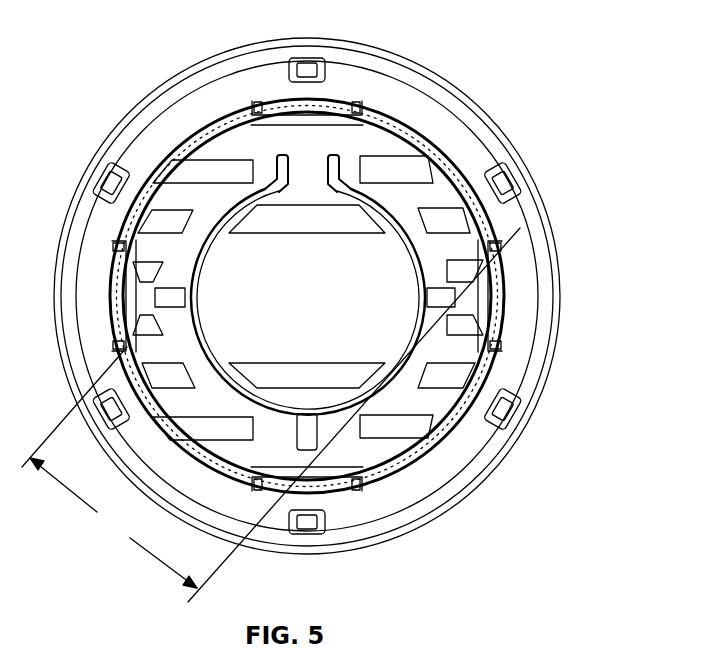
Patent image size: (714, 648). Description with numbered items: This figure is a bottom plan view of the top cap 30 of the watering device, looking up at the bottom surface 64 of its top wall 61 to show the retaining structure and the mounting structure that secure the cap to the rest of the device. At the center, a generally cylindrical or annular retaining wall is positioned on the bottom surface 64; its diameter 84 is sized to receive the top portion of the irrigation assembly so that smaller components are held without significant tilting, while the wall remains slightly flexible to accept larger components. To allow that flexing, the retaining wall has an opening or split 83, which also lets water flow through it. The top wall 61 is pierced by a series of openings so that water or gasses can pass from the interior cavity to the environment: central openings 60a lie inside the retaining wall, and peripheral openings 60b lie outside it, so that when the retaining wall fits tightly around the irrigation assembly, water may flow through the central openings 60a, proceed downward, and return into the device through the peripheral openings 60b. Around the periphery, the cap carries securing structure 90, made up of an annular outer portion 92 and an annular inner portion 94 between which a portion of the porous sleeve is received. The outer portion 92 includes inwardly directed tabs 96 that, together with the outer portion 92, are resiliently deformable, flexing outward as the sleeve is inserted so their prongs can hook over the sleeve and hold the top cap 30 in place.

The top cap 30 is at (579, 291).
The central openings 60a is at (298, 228).
The peripheral openings 60b is at (478, 372).
The top wall 61 is at (388, 143).
The bottom surface 64 is at (433, 190).
The opening or split 83 is at (307, 160).
The diameter 84 is at (271, 415).
The securing structure 90 is at (163, 158).
The annular outer portion 92 is at (472, 468).
The annular inner portion 94 is at (483, 233).
The tabs 96 is at (100, 182).